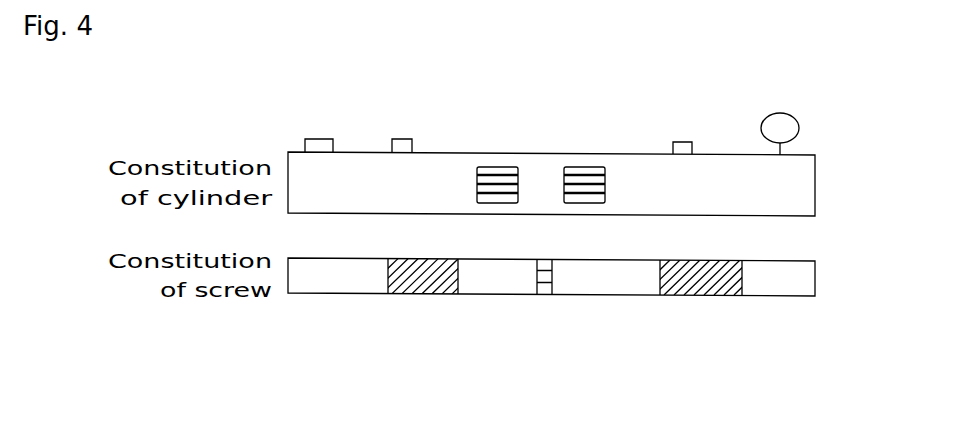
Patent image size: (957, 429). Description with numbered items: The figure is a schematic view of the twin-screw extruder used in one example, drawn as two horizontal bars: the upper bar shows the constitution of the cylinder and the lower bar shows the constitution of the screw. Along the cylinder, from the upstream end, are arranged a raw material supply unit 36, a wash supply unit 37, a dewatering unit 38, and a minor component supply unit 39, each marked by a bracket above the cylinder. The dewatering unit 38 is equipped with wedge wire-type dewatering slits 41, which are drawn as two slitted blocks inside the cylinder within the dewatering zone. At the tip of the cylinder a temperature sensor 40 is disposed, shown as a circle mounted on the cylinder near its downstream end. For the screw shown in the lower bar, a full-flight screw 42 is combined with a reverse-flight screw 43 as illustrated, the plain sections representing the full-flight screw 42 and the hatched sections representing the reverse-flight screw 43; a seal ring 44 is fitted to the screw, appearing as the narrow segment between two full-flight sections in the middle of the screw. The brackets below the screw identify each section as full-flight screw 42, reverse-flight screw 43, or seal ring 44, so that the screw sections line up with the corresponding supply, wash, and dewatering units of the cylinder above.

The raw material supply unit 36 is at (360, 118).
The wash supply unit 37 is at (463, 118).
The dewatering unit 38 is at (652, 118).
The minor component supply unit 39 is at (756, 119).
The temperature sensor 40 is at (789, 115).
The wedge wire-type dewatering slits 41 is at (498, 203).
The full-flight screw 42 is at (382, 316).
The reverse-flight screw 43 is at (455, 316).
The seal ring 44 is at (553, 316).